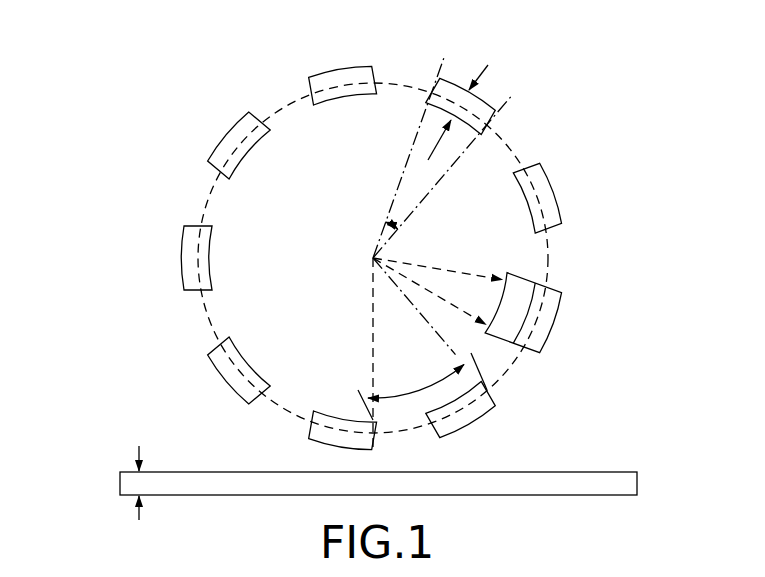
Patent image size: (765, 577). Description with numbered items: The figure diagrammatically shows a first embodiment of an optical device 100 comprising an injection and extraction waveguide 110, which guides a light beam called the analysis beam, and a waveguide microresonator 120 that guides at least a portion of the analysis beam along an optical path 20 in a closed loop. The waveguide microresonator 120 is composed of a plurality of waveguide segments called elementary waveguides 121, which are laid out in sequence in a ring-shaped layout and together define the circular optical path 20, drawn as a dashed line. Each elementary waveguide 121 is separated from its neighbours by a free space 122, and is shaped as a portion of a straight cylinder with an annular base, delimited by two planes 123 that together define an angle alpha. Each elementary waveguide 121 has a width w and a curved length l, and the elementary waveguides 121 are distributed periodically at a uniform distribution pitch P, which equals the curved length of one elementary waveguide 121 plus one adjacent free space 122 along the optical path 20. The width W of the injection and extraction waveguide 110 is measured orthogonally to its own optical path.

The optical device 100 is at (136, 113).
The injection and extraction waveguide 110 is at (605, 482).
The waveguide microresonator 120 is at (576, 327).
The elementary waveguide 121 is at (221, 375).
The free space 122 is at (273, 104).
The planes 123 is at (440, 62).
The optical path 20 is at (549, 263).